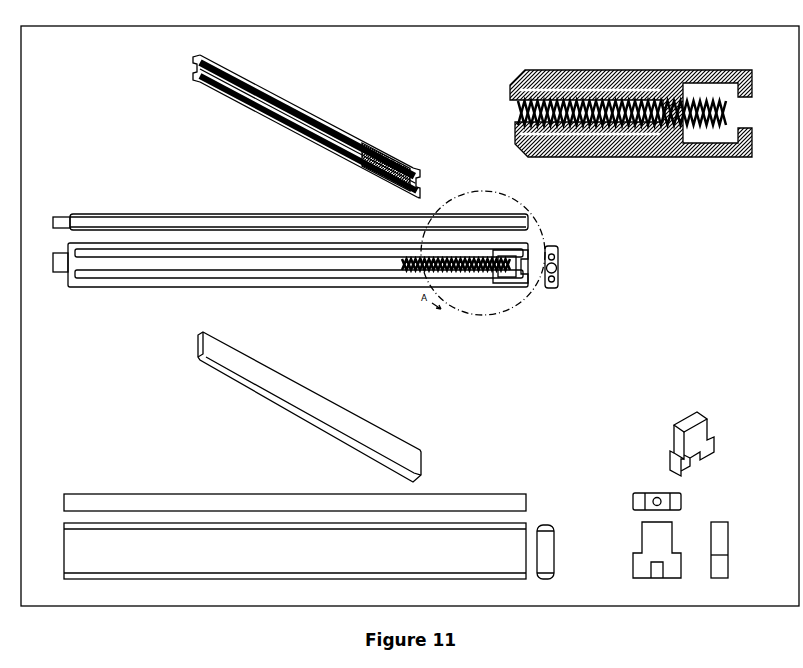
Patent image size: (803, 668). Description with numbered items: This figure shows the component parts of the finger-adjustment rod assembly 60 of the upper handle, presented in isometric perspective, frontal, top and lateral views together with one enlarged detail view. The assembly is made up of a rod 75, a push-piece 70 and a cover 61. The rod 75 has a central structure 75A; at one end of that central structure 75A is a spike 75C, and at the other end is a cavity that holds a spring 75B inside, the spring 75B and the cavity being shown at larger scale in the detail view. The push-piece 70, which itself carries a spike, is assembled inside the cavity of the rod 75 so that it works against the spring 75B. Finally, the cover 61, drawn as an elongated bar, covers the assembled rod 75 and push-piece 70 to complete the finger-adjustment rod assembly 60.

The finger-adjustment rod assembly 60 is at (410, 72).
The cover 61 is at (313, 395).
The push-piece 70 is at (673, 425).
The rod 75 is at (318, 113).
The central structure 75A is at (592, 80).
The spring 75B is at (693, 127).
The spike 75C is at (56, 217).